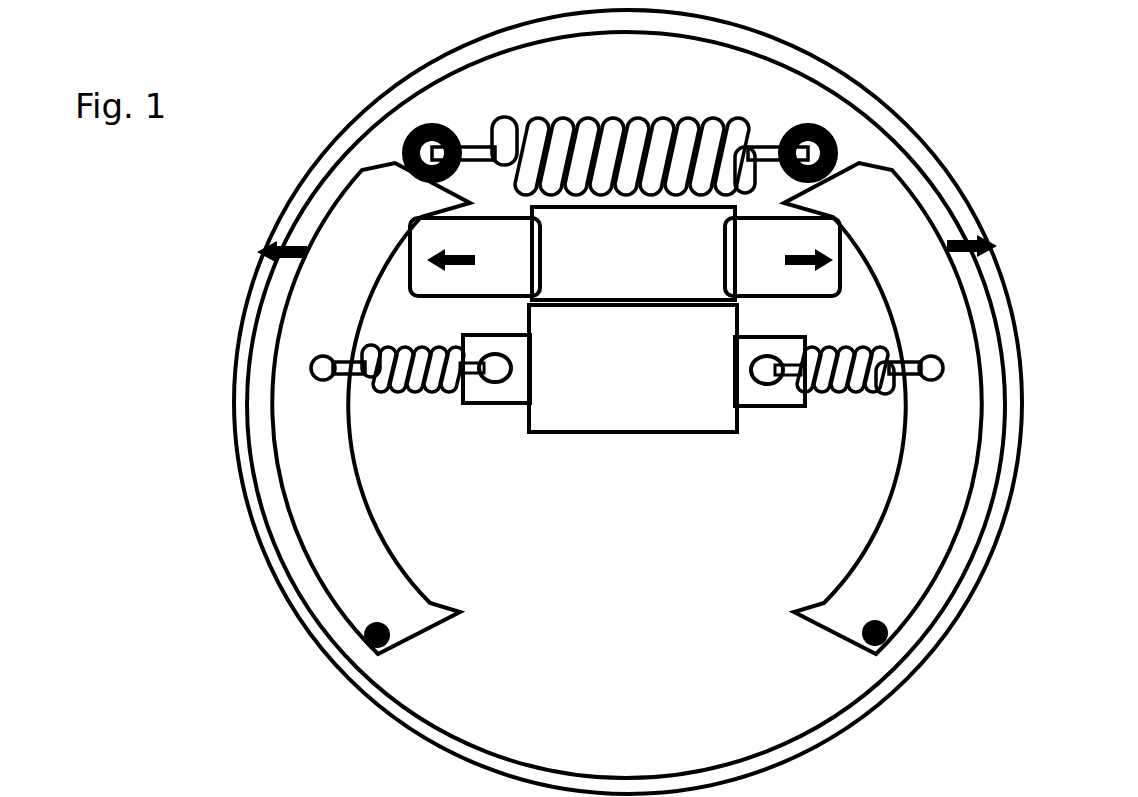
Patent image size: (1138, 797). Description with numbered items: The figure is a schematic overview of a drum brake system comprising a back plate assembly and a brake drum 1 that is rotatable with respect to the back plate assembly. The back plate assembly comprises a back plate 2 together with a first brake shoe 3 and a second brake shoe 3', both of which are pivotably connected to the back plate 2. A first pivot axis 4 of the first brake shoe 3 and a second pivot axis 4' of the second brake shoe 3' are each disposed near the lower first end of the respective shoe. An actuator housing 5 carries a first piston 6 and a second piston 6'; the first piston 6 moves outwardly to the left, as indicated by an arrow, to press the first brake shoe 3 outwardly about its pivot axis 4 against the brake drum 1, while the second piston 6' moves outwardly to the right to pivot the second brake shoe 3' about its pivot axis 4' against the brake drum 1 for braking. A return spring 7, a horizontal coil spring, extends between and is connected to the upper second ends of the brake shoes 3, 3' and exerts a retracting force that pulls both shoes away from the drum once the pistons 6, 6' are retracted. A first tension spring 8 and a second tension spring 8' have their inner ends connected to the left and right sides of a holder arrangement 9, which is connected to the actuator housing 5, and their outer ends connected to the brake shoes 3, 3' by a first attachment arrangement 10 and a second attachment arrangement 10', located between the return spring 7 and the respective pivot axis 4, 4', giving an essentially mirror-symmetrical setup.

The brake drum 1 is at (230, 434).
The back plate 2 is at (622, 683).
The first brake shoe 3 is at (340, 396).
The second brake shoe 3' is at (898, 368).
The first pivot axis 4 is at (330, 692).
The second pivot axis 4' is at (939, 682).
The actuator housing 5 is at (635, 278).
The first piston 6 is at (475, 257).
The second piston 6' is at (782, 257).
The return spring 7 is at (735, 118).
The first tension spring 8 is at (398, 436).
The second tension spring 8' is at (859, 444).
The holder arrangement 9 is at (764, 426).
The first attachment arrangement 10 is at (230, 345).
The second attachment arrangement 10' is at (1028, 337).